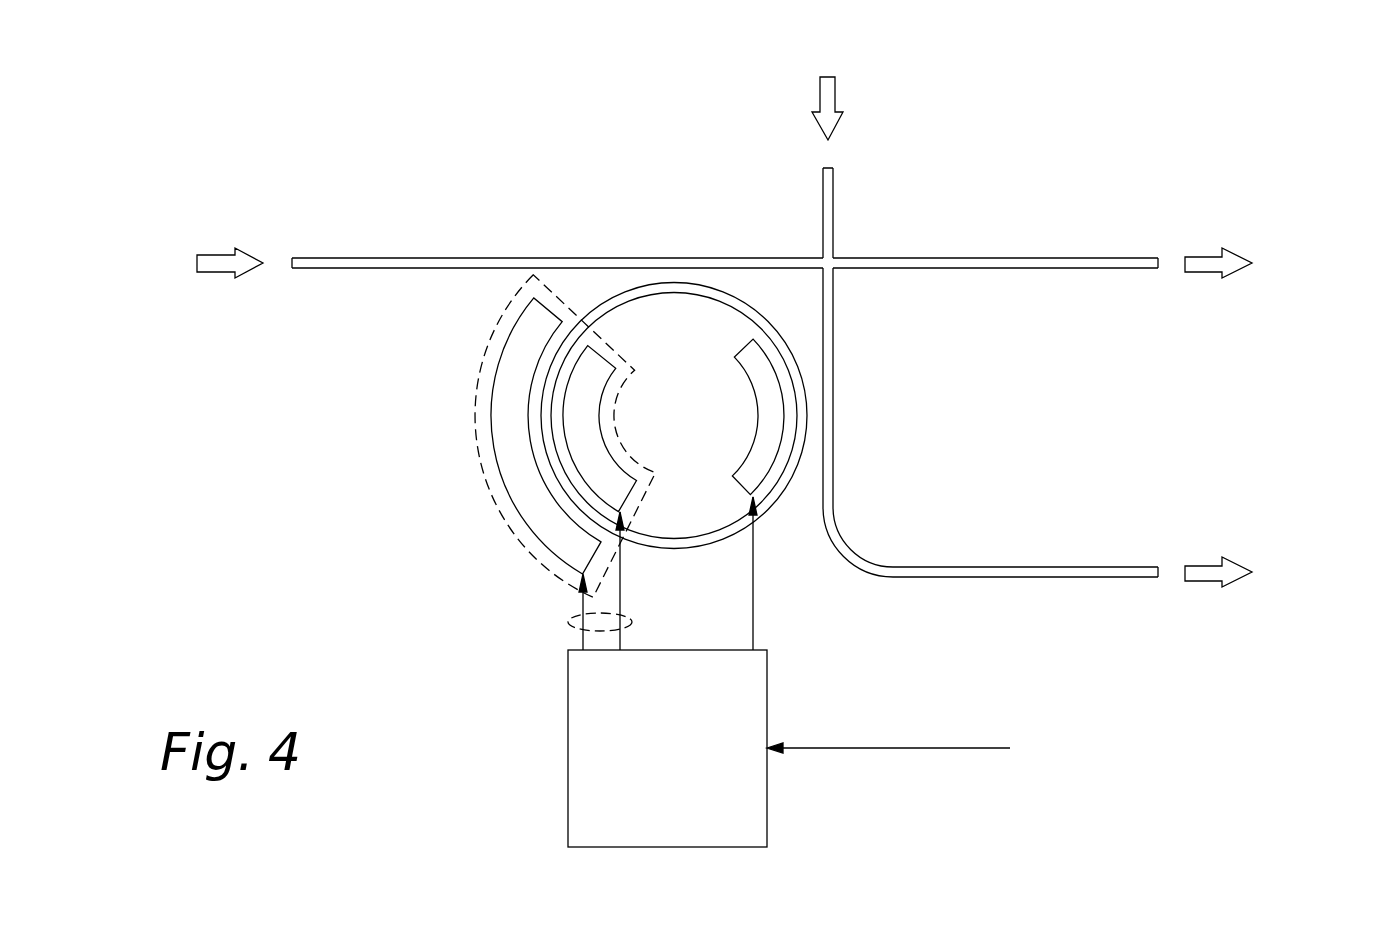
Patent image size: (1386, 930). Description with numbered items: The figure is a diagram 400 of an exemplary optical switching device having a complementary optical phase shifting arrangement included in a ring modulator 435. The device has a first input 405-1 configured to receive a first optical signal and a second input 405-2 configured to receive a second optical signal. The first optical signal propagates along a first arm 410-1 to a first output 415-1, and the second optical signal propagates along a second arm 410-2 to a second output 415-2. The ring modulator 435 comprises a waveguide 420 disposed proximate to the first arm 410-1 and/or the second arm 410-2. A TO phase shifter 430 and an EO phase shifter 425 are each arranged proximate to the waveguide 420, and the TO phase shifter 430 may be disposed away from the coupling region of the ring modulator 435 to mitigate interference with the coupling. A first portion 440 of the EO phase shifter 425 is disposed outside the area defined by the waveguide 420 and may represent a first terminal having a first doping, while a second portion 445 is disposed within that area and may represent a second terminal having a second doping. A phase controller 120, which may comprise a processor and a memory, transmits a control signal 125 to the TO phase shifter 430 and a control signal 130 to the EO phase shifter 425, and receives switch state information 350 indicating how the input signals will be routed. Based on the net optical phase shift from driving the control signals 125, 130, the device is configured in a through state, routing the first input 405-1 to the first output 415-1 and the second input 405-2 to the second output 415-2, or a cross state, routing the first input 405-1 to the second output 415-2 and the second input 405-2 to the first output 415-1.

The diagram 400 is at (1228, 90).
The first input 405-1 is at (216, 254).
The second input 405-2 is at (820, 91).
The first arm 410-1 is at (407, 270).
The second arm 410-2 is at (1105, 579).
The first output 415-1 is at (1205, 256).
The second output 415-2 is at (1205, 565).
The waveguide 420 is at (674, 552).
The EO phase shifter 425 is at (476, 423).
The TO phase shifter 430 is at (758, 420).
The ring modulator 435 is at (516, 436).
The first portion 440 is at (500, 368).
The second portion 445 is at (568, 460).
The control signal 130 is at (568, 621).
The control signal 125 is at (756, 621).
The phase controller 120 is at (660, 849).
The switch state information 350 is at (895, 751).